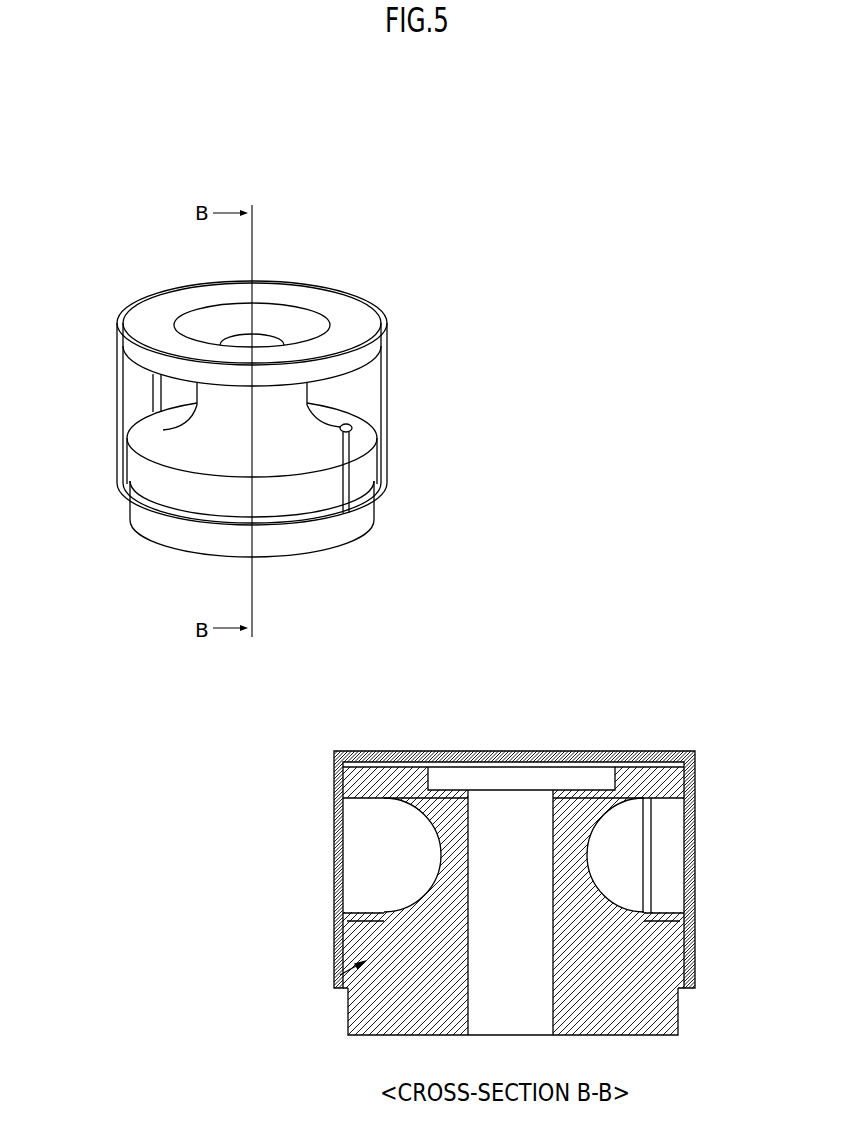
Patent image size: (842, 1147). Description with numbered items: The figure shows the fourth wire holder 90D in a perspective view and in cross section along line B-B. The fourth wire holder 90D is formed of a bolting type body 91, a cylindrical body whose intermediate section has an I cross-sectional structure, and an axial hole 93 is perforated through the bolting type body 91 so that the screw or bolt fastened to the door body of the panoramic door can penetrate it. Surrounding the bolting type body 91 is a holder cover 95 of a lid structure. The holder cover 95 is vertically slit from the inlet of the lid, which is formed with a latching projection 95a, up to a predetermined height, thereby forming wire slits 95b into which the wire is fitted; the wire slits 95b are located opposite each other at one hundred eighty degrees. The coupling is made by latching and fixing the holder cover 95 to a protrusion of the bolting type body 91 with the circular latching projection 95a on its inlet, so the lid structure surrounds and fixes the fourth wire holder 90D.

The fourth wire holder 90D is at (363, 271).
The bolting type body 91 is at (158, 533).
The axial hole 93 is at (523, 813).
The holder cover 95 is at (388, 394).
The latching projection 95a is at (671, 968).
The wire slits 95b is at (638, 850).